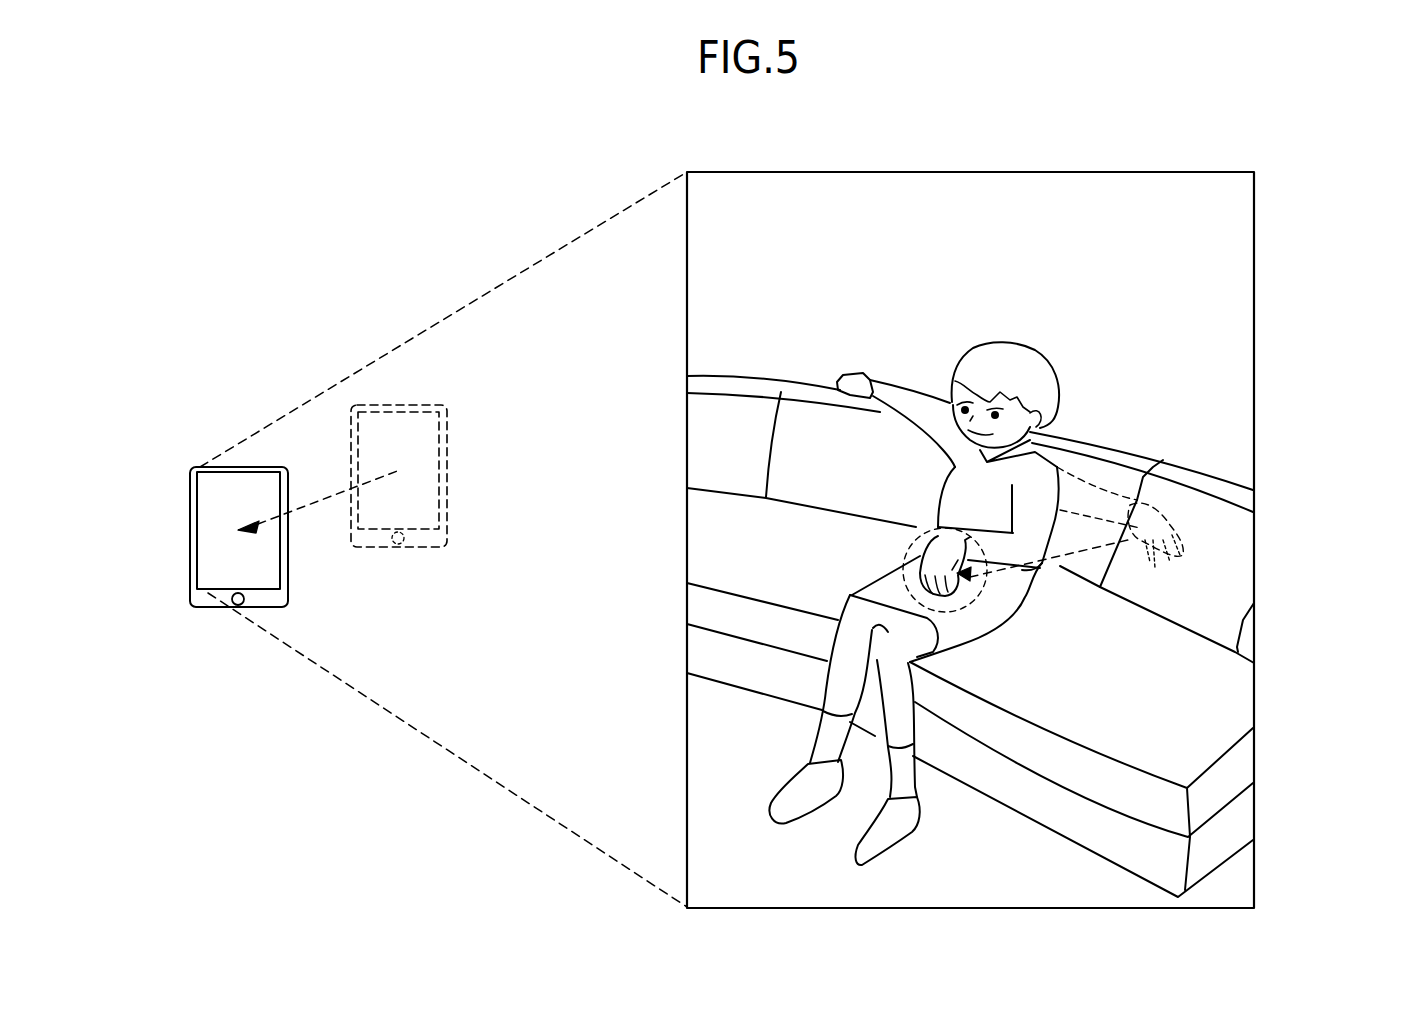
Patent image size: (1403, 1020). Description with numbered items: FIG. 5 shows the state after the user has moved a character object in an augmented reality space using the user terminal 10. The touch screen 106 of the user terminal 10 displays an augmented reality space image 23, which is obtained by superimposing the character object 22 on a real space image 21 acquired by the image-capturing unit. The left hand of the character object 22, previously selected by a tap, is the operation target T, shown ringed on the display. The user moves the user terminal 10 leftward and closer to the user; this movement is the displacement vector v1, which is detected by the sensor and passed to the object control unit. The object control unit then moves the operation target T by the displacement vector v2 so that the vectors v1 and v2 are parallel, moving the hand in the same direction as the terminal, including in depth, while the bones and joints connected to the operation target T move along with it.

The touch screen 106 is at (210, 530).
The user terminal 10 is at (288, 580).
The real space image 21 is at (1232, 292).
The character object 22 is at (1060, 363).
The augmented reality space image 23 is at (1332, 283).
The operation target T is at (910, 541).
The displacement vector of the user terminal v1 is at (318, 494).
The displacement vector of the operation target v2 is at (1077, 553).